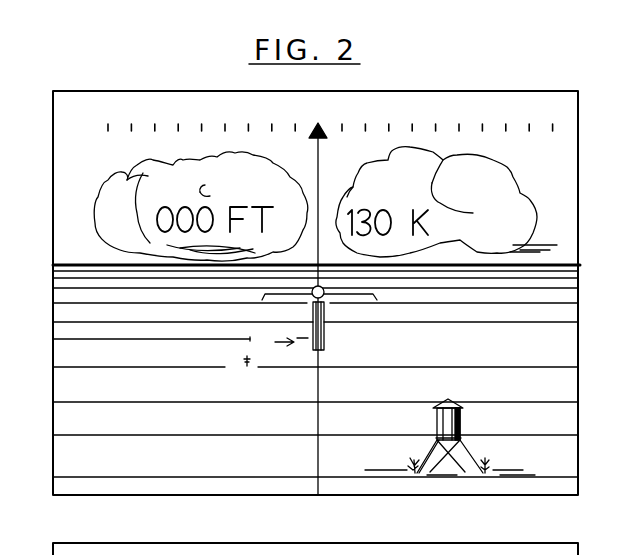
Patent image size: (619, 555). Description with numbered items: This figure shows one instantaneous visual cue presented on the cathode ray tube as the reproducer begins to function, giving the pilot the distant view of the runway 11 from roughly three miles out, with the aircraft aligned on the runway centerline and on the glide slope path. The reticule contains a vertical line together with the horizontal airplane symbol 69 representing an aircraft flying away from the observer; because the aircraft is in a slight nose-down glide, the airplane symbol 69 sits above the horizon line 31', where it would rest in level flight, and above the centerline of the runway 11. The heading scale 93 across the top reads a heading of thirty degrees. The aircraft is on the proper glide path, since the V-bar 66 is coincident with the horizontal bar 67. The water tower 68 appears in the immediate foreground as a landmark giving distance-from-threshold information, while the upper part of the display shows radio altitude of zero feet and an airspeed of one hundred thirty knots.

The heading scale 93 is at (337, 102).
The horizon line 31' is at (330, 265).
The runway 11 is at (578, 339).
The airplane symbol 69 is at (377, 300).
The V-bar 66 is at (276, 333).
The horizontal bar 67 is at (301, 343).
The water tower 68 is at (248, 370).